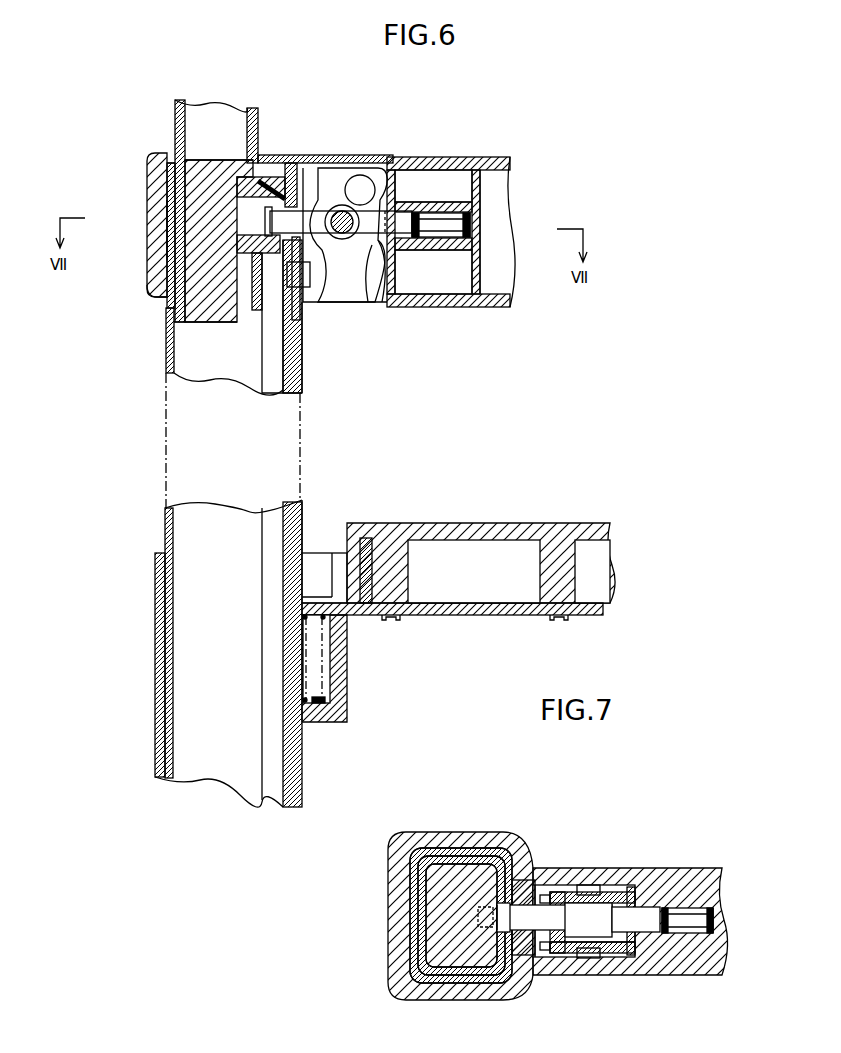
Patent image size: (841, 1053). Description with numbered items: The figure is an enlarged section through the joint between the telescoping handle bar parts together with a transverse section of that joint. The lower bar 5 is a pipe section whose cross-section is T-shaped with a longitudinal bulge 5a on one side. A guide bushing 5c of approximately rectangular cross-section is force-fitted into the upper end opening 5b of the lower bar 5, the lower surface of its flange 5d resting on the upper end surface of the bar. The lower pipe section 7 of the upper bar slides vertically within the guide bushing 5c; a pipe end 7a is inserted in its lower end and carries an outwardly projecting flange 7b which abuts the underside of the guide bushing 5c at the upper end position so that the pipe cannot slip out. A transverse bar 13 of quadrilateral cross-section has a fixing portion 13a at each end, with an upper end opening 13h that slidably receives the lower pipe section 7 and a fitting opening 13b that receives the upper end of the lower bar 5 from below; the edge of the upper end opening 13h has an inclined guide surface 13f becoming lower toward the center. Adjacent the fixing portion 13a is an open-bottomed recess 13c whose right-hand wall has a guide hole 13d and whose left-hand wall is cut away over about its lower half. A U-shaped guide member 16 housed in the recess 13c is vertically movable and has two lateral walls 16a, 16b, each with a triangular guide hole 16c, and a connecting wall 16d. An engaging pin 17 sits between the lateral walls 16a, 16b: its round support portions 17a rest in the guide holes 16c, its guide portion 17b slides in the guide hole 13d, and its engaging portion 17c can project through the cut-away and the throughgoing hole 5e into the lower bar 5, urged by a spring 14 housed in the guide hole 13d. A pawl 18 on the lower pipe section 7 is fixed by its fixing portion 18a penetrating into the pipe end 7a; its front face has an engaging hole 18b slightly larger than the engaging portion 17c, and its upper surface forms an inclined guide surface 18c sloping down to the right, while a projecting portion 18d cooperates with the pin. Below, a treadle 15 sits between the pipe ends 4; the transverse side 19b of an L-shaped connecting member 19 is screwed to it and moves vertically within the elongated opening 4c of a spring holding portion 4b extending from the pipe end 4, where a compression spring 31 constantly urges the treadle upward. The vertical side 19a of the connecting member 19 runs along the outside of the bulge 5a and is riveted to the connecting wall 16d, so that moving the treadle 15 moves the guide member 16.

In FIG. 6, the pipe end 4 is at (160, 650).
In FIG. 6, the spring holding portion 4b is at (320, 573).
In FIG. 6, the elongated opening 4c is at (340, 630).
In FIG. 6, the lower bar 5 is at (165, 338).
In FIG. 7, the lower bar 5 is at (400, 850).
In FIG. 6, the bulge 5a is at (275, 388).
In FIG. 7, the bulge 5a is at (520, 880).
In FIG. 6, the upper end opening 5b is at (168, 178).
In FIG. 6, the guide bushing 5c is at (157, 297).
In FIG. 7, the guide bushing 5c is at (452, 855).
In FIG. 6, the flange 5d is at (168, 162).
In FIG. 6, the throughgoing hole 5e is at (308, 170).
In FIG. 7, the throughgoing hole 5e is at (535, 885).
In FIG. 6, the lower pipe section 7 is at (188, 160).
In FIG. 7, the lower pipe section 7 is at (418, 918).
In FIG. 6, the pipe end 7a is at (218, 183).
In FIG. 6, the flange 7b is at (175, 335).
In FIG. 6, the transverse bar 13 is at (427, 163).
In FIG. 6, the fixing portion 13a is at (147, 150).
In FIG. 6, the fitting opening 13b is at (168, 230).
In FIG. 6, the recess 13c is at (386, 290).
In FIG. 6, the guide hole 13d is at (470, 222).
In FIG. 7, the guide hole 13d is at (700, 915).
In FIG. 6, the inclined guide surface 13f is at (260, 152).
In FIG. 6, the upper end opening 13h is at (200, 170).
In FIG. 6, the spring 14 is at (466, 237).
In FIG. 7, the spring 14 is at (700, 925).
In FIG. 6, the treadle 15 is at (487, 523).
In FIG. 6, the guide member 16 is at (327, 283).
In FIG. 7, the guide member 16 is at (563, 892).
In FIG. 7, the lateral wall 16a is at (631, 887).
In FIG. 7, the lateral wall 16b is at (620, 950).
In FIG. 6, the guide hole 16c is at (357, 190).
In FIG. 6, the connecting wall 16d is at (306, 287).
In FIG. 7, the connecting wall 16d is at (555, 947).
In FIG. 6, the engaging pin 17 is at (362, 215).
In FIG. 7, the engaging pin 17 is at (575, 925).
In FIG. 6, the support portion 17a is at (370, 280).
In FIG. 7, the support portion 17a is at (590, 888).
In FIG. 6, the guide portion 17b is at (400, 220).
In FIG. 7, the guide portion 17b is at (655, 905).
In FIG. 6, the engaging portion 17c is at (290, 225).
In FIG. 7, the engaging portion 17c is at (523, 925).
In FIG. 6, the pawl 18 is at (254, 108).
In FIG. 7, the pawl 18 is at (508, 872).
In FIG. 6, the fixing portion 18a is at (207, 318).
In FIG. 6, the engaging hole 18b is at (254, 318).
In FIG. 6, the inclined guide surface 18c is at (278, 175).
In FIG. 6, the clamp arm 18d is at (283, 188).
In FIG. 6, the connecting member 19 is at (313, 506).
In FIG. 6, the vertical side 19a is at (303, 383).
In FIG. 6, the transverse side 19b is at (487, 615).
In FIG. 6, the compression spring 31 is at (332, 700).